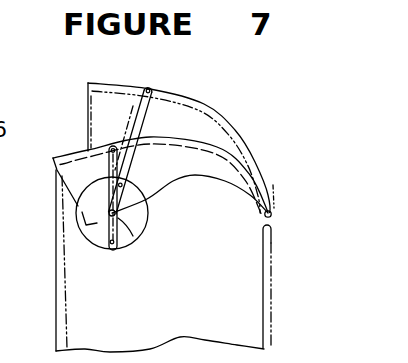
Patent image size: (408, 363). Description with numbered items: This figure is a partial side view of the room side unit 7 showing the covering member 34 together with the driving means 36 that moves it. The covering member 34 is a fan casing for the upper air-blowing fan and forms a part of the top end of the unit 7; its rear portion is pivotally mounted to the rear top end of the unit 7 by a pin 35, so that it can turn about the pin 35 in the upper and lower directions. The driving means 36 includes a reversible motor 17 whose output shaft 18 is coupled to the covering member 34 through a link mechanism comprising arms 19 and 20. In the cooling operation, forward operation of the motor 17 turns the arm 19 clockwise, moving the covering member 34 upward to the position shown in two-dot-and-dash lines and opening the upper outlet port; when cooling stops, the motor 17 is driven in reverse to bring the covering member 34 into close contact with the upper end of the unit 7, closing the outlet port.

The room side unit 7 is at (272, 290).
The reversible motor 17 is at (103, 247).
The output shaft 18 is at (116, 216).
The arm 19 is at (133, 248).
The arm 20 is at (108, 160).
The covering member 34 is at (236, 152).
The pin 35 is at (273, 214).
The driving means 36 is at (89, 247).